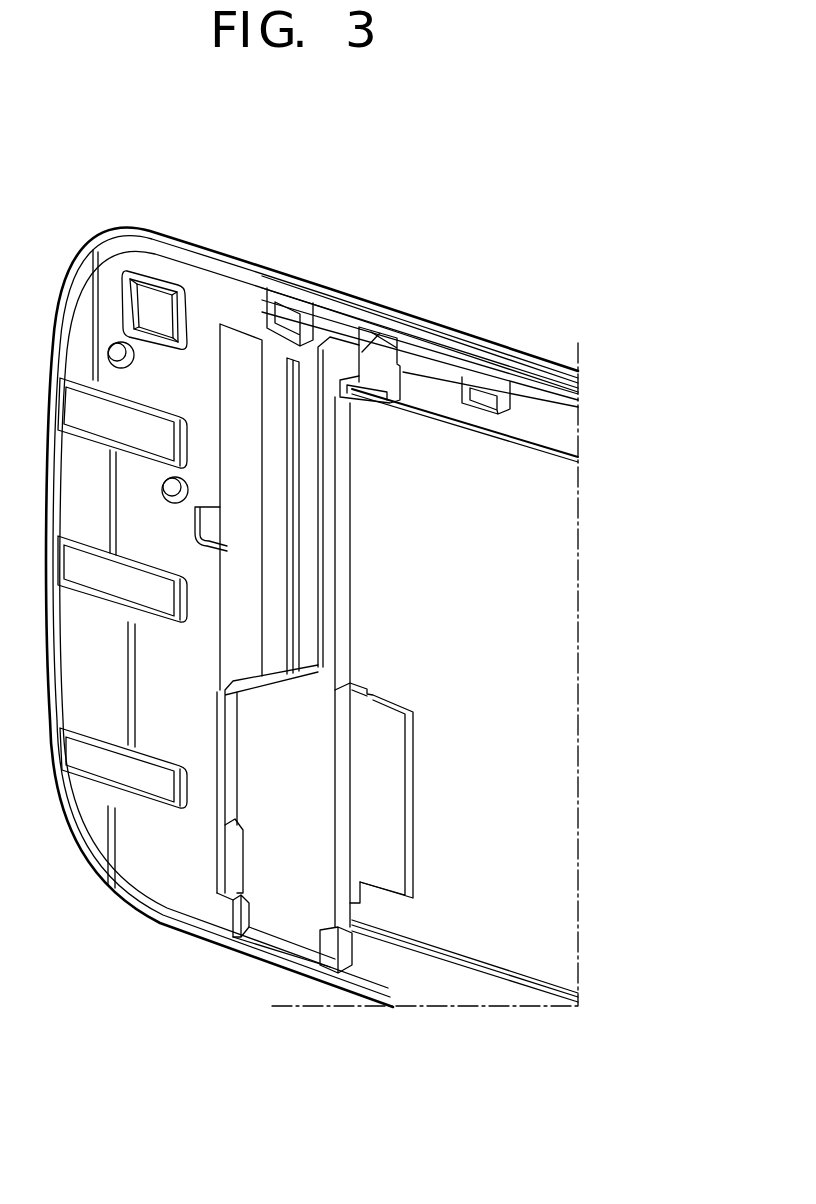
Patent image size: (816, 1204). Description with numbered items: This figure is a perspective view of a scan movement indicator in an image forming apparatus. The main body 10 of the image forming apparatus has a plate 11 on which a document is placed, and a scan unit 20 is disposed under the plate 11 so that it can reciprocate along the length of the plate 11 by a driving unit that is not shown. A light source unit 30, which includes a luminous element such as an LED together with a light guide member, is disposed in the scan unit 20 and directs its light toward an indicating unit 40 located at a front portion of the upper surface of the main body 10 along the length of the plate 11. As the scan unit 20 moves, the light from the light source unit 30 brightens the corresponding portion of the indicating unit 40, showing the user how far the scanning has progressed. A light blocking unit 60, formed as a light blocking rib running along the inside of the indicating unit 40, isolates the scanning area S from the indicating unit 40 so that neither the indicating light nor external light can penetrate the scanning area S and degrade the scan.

The main body of the image forming apparatus 10 is at (217, 250).
The plate 11 is at (578, 852).
The scan unit 20 is at (343, 468).
The light source unit 30 is at (378, 338).
The indicating unit 40 is at (437, 347).
The light blocking unit 60 is at (508, 387).
The scanning area S is at (482, 488).